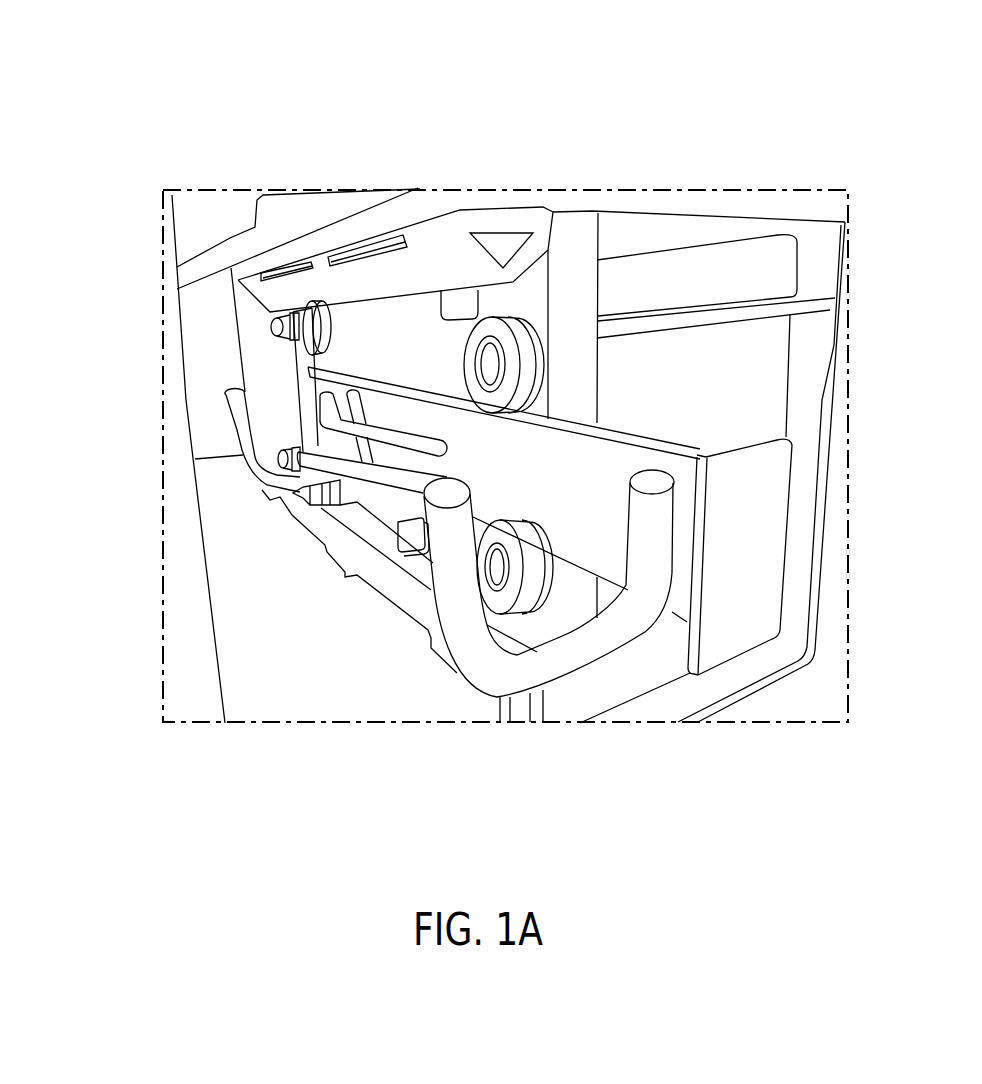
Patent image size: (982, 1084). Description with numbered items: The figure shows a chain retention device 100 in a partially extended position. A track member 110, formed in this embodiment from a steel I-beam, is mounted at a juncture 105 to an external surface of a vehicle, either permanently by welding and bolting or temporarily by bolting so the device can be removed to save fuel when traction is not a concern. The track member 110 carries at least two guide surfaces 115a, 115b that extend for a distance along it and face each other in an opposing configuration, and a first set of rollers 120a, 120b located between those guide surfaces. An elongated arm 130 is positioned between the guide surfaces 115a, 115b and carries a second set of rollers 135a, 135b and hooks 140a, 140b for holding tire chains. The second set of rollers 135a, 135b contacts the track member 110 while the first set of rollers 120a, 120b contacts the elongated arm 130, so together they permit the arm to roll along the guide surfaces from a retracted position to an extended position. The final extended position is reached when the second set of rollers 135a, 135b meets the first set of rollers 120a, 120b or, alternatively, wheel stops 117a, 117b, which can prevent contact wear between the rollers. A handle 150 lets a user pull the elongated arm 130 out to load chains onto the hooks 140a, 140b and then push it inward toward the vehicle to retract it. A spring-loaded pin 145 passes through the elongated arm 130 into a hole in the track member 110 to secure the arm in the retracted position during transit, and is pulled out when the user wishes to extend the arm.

The chain retention device 100 is at (500, 38).
The juncture 105 is at (212, 454).
The track member 110 is at (352, 237).
The guide surface 115a is at (365, 285).
The guide surface 115b is at (343, 550).
The wheel stop 117a is at (465, 302).
The wheel stop 117b is at (410, 537).
The roller of first set of rollers 120a is at (513, 303).
The roller of first set of rollers 120b is at (514, 517).
The elongated arm 130 is at (613, 410).
The roller of second set of rollers 135a is at (268, 326).
The roller of second set of rollers 135b is at (313, 472).
The hook 140a is at (487, 710).
The hook 140b is at (255, 490).
The spring-loaded pin 145 is at (396, 426).
The handle 150 is at (397, 493).